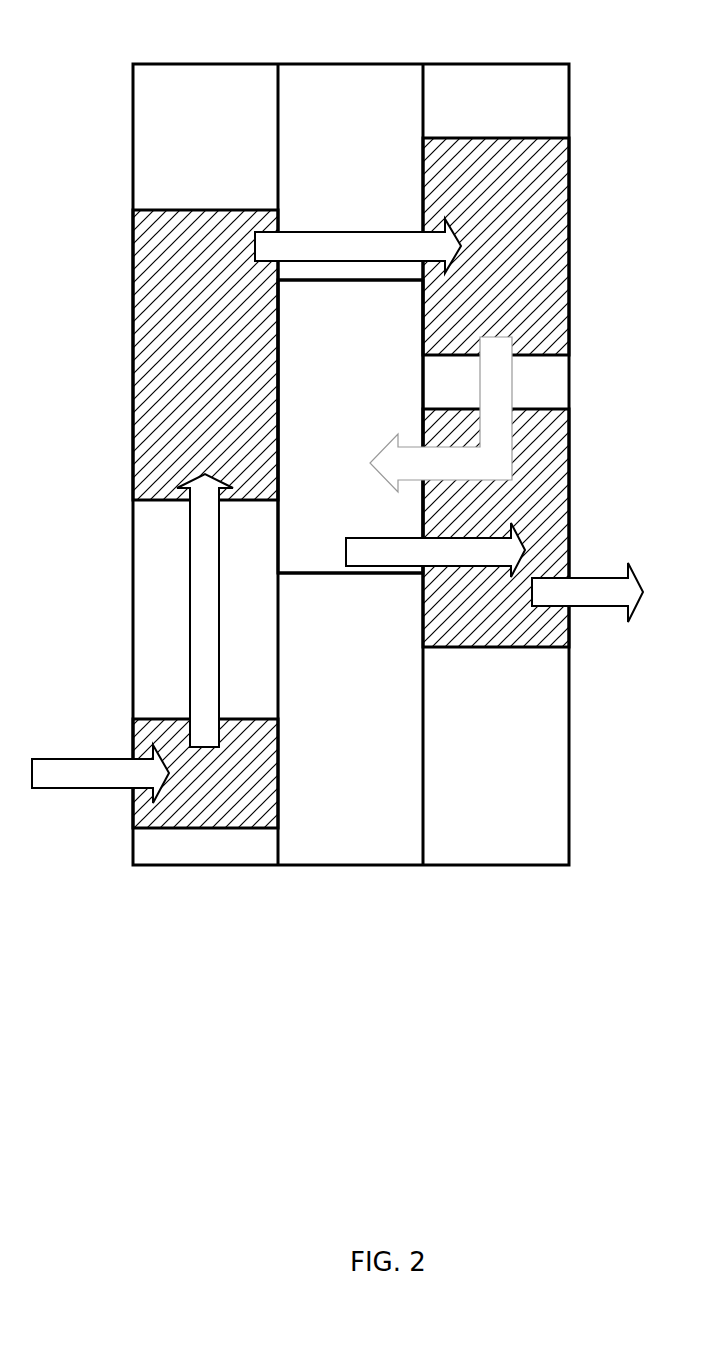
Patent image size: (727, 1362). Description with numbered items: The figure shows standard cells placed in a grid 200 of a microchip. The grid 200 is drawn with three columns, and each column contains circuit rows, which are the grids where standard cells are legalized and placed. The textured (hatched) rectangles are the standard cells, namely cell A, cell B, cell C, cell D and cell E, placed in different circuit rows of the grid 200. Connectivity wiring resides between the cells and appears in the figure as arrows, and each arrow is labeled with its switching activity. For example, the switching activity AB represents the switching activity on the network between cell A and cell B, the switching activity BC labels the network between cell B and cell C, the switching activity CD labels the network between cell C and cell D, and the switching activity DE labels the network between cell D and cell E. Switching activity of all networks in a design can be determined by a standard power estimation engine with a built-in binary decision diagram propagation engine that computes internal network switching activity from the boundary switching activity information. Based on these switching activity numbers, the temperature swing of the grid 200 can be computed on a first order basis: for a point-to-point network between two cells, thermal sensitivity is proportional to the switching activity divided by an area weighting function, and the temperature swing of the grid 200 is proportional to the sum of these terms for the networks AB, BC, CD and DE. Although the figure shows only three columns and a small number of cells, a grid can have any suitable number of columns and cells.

The grid 200 is at (110, 18).
The cell A is at (205, 773).
The cell B is at (205, 355).
The cell C is at (496, 246).
The cell D is at (350, 426).
The cell E is at (496, 528).
The switching activity between cell A and cell B AB is at (205, 610).
The switching activity between cell B and cell C BC is at (358, 246).
The switching activity between cell C and cell D CD is at (441, 414).
The switching activity between cell D and cell E DE is at (435, 550).